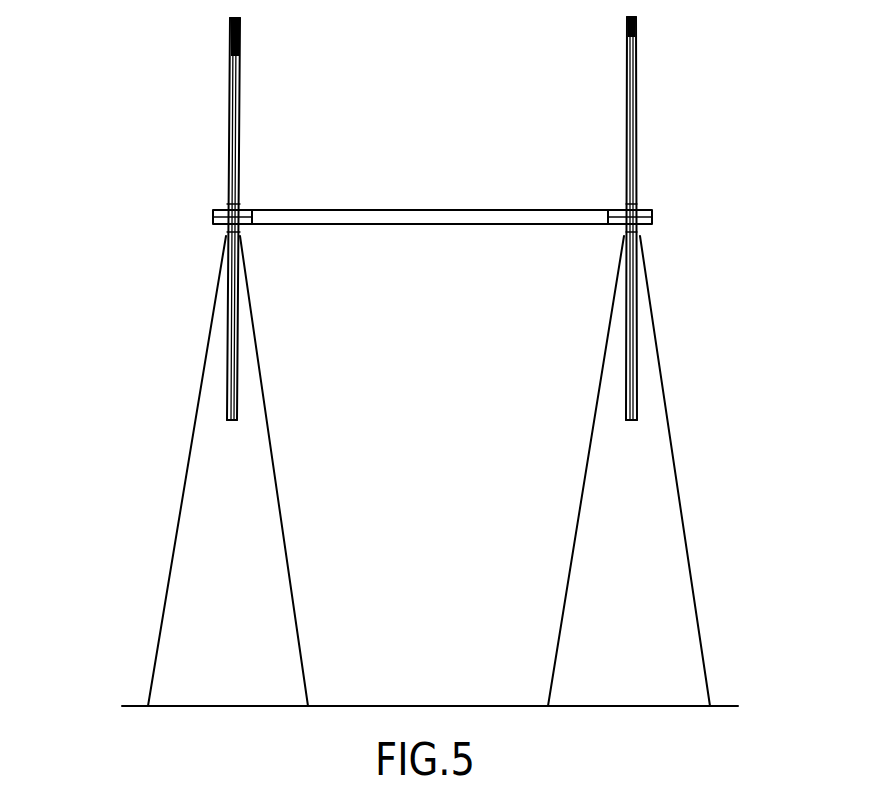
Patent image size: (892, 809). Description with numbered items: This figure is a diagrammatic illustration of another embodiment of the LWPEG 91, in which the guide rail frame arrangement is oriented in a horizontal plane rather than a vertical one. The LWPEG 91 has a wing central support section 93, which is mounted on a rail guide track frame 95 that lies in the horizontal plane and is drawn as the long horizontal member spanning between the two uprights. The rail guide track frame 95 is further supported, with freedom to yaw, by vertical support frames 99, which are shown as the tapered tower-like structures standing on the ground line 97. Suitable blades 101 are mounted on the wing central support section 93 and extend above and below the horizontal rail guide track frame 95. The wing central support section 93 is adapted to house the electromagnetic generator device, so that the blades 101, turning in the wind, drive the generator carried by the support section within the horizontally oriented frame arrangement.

The LWPEG 91 is at (704, 148).
The wing central support section 93 is at (602, 210).
The rail guide track frame 95 is at (218, 228).
The ground 97 is at (515, 707).
The vertical support frames 99 is at (178, 511).
The blades 101 is at (228, 160).